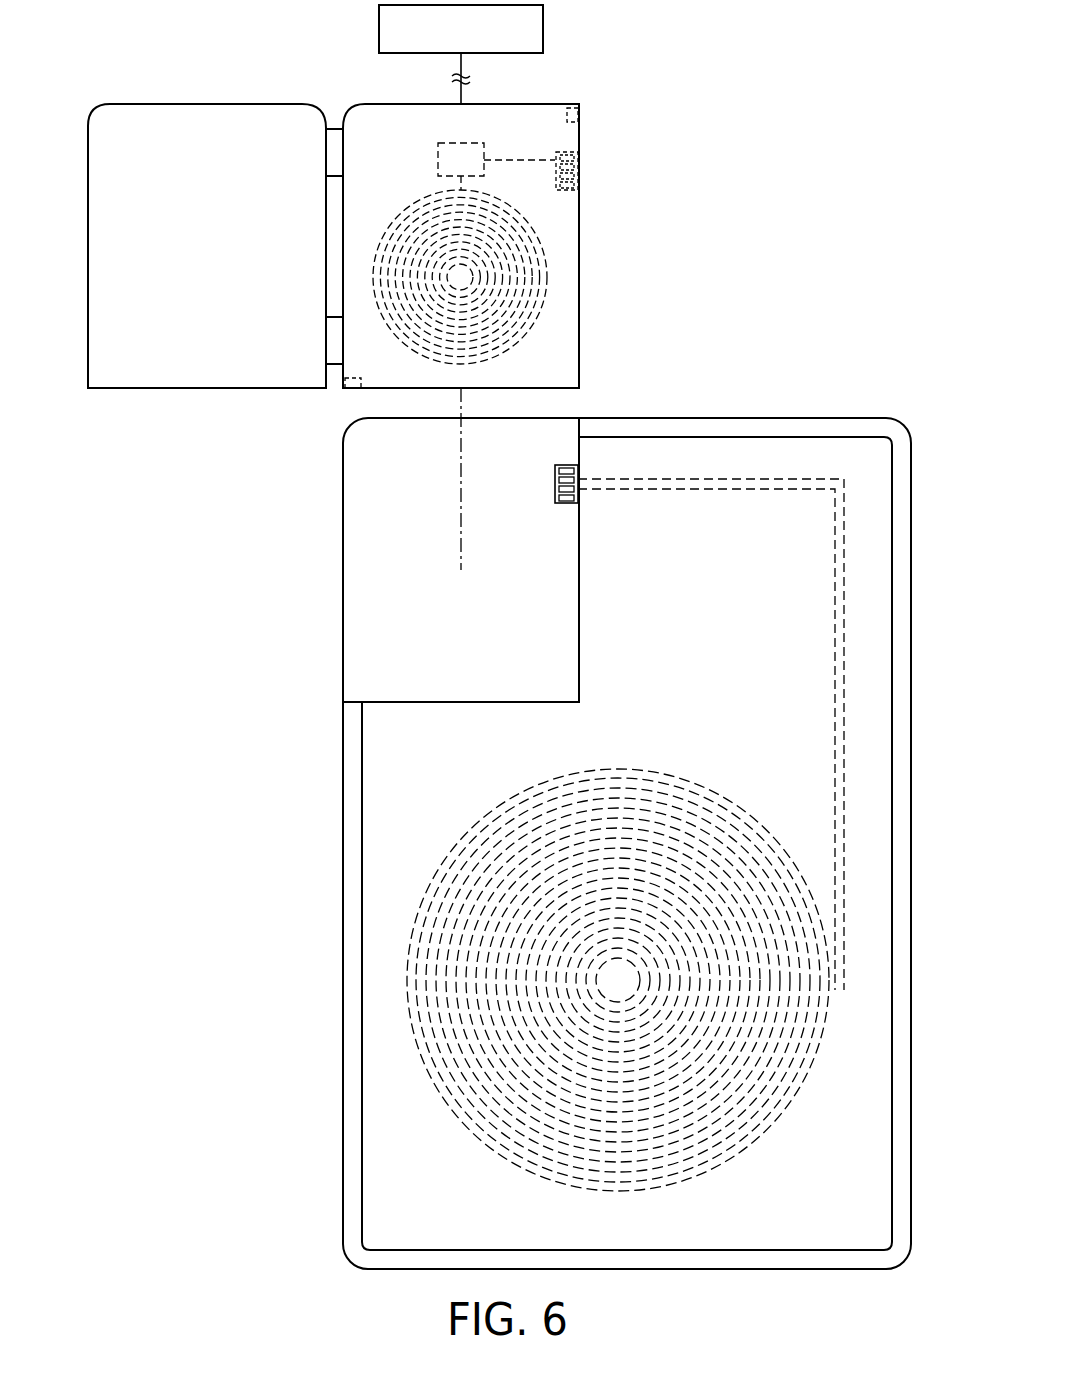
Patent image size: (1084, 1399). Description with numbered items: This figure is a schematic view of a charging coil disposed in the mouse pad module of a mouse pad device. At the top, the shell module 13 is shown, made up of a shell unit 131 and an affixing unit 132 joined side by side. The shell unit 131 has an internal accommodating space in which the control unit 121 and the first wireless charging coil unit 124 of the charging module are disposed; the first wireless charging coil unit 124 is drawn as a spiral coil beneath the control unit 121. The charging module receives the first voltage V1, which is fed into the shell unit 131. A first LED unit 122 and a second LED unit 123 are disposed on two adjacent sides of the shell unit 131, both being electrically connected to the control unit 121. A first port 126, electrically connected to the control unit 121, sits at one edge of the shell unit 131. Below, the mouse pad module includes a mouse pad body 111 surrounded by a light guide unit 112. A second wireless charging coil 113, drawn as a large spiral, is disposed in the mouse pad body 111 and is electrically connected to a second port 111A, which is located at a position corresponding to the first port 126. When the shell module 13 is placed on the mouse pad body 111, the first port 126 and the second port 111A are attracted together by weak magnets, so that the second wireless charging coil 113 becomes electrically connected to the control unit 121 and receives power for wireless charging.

The shell module 13 is at (350, 42).
The shell unit 131 is at (400, 125).
The affixing unit 132 is at (220, 130).
The first voltage V1 is at (543, 27).
The control unit 121 is at (467, 143).
The first LED unit 122 is at (580, 118).
The first port 126 is at (580, 171).
The first wireless charging coil unit 124 is at (548, 272).
The second LED unit 123 is at (352, 392).
The second port 111A is at (566, 470).
The mouse pad body 111 is at (400, 783).
The light guide unit 112 is at (350, 1075).
The second wireless charging coil 113 is at (408, 952).